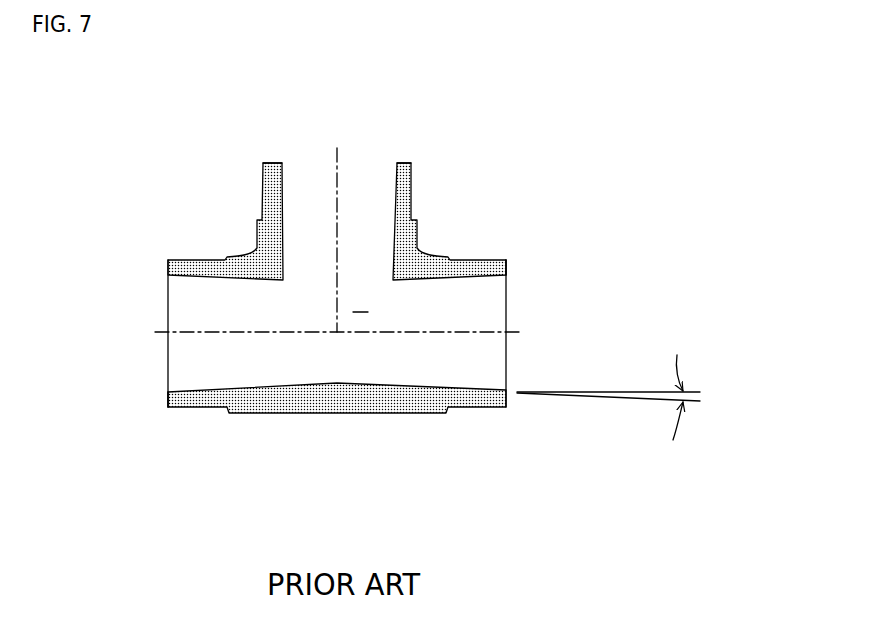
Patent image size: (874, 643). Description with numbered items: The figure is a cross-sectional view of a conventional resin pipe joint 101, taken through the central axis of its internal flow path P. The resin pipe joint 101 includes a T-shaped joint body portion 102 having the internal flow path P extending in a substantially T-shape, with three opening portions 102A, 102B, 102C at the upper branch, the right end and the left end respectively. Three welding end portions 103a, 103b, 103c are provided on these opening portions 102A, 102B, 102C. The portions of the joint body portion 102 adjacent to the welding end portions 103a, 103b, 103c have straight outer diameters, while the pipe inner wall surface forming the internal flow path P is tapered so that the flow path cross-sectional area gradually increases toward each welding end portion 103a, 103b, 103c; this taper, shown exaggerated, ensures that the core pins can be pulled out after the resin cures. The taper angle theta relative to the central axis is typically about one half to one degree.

The resin pipe joint 101 is at (552, 117).
The joint body portion 102 is at (382, 414).
The opening portion 102A is at (297, 172).
The opening portion 102B is at (498, 297).
The opening portion 102C is at (176, 308).
The welding end portion 103a is at (402, 163).
The welding end portion 103b is at (507, 267).
The welding end portion 103c is at (167, 398).